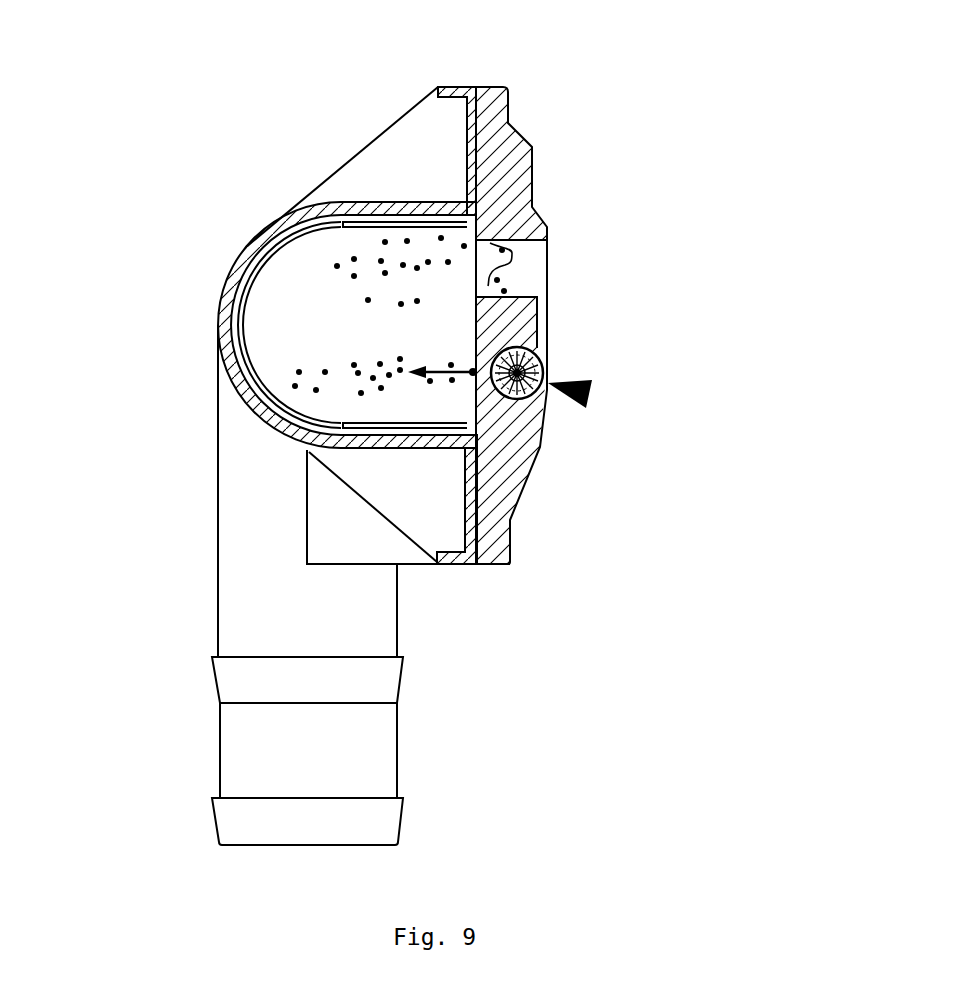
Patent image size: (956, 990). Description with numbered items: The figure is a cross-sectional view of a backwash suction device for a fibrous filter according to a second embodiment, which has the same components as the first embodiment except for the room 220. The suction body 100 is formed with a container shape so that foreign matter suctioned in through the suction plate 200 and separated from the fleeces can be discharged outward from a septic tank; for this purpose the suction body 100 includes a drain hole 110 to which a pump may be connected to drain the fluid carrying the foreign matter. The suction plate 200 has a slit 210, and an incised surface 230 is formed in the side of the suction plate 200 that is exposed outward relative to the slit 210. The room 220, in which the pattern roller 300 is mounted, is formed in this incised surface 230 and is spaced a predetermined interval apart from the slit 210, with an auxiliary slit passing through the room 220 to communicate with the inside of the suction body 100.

The suction body 100 is at (240, 255).
The drain hole 110 is at (247, 760).
The suction plate 200 is at (495, 122).
The slit 210 is at (458, 203).
The room 220 is at (550, 393).
The incised surface 230 is at (538, 310).
The pattern roller 300 is at (588, 394).